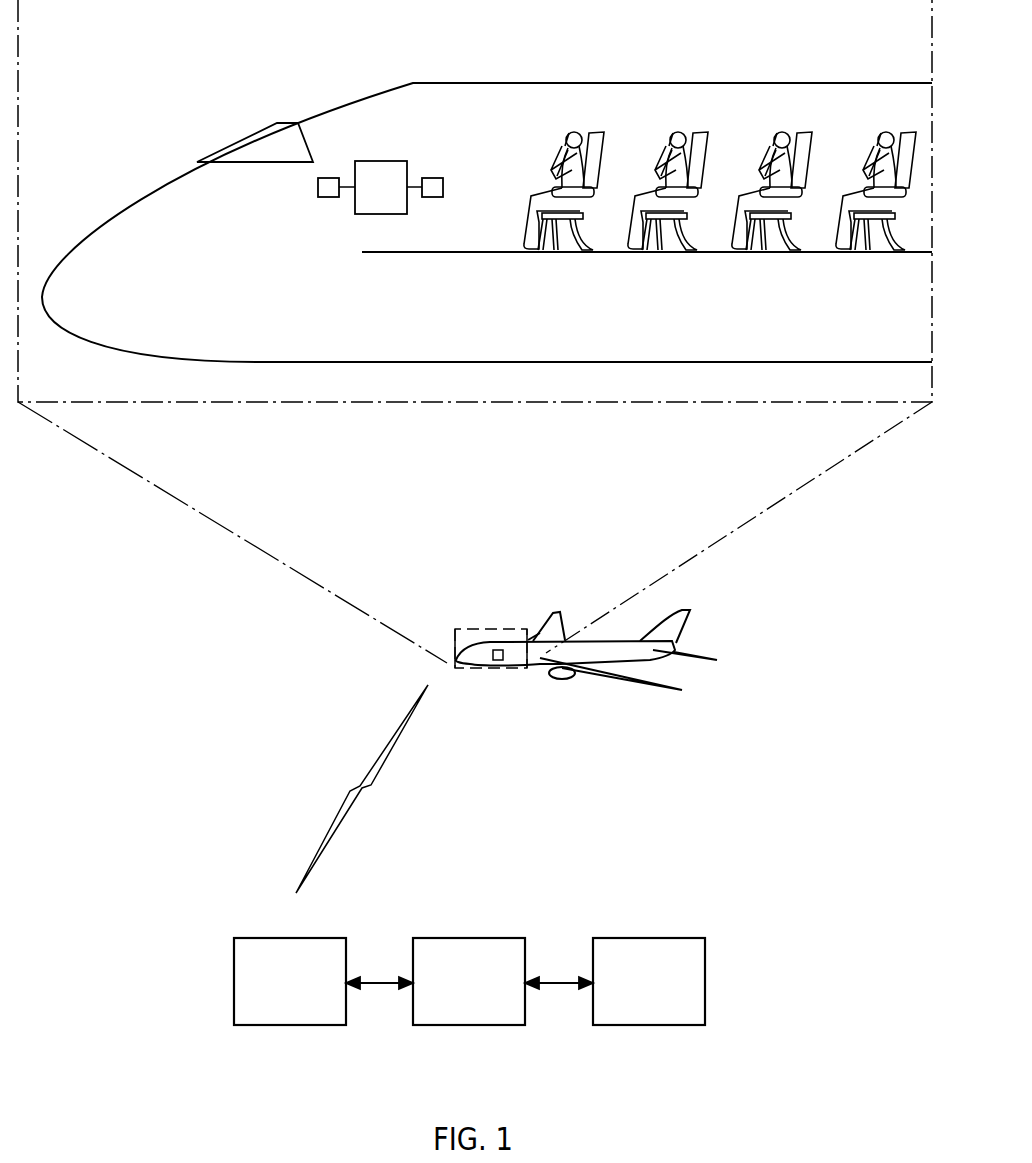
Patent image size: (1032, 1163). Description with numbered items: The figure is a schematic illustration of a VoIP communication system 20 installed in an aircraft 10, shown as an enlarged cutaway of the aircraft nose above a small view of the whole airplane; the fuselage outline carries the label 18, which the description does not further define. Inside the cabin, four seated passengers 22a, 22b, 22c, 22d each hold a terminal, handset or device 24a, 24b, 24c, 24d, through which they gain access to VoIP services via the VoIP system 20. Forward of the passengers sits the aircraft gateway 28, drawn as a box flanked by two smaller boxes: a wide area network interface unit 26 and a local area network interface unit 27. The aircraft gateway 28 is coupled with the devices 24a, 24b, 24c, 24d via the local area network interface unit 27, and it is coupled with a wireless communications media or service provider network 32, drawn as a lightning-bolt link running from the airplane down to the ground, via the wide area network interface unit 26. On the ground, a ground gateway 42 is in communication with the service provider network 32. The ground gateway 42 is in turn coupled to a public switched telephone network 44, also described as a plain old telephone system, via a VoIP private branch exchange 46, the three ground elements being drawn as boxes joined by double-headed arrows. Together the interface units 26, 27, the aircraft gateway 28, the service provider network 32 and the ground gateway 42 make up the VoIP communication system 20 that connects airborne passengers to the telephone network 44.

The aircraft 10 is at (590, 83).
The fuselage 18 is at (409, 82).
The VoIP communication system 20 is at (261, 52).
The passenger 22a is at (563, 207).
The passenger 22b is at (667, 207).
The passenger 22c is at (771, 207).
The passenger 22d is at (875, 207).
The device 24a is at (576, 133).
The device 24b is at (680, 133).
The device 24c is at (784, 133).
The device 24d is at (889, 133).
The wide area network interface unit 26 is at (327, 198).
The local area network interface unit 27 is at (430, 178).
The aircraft gateway 28 is at (380, 161).
The service provider network 32 is at (375, 758).
The ground gateway 42 is at (262, 938).
The public switched telephone network 44 is at (627, 938).
The VoIP private branch exchange 46 is at (442, 938).